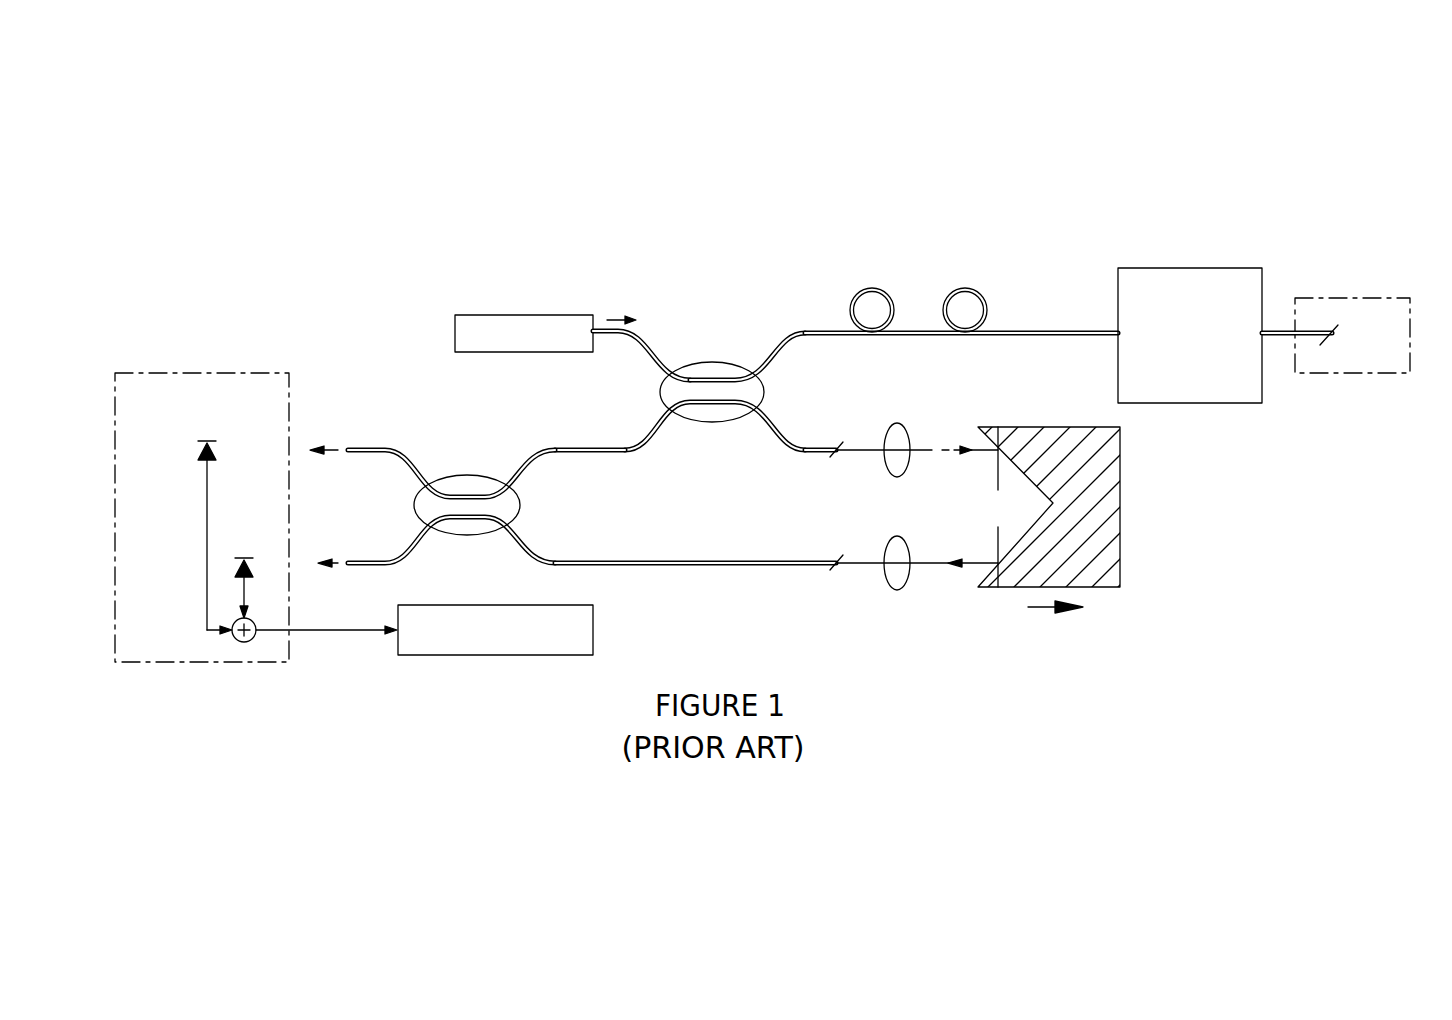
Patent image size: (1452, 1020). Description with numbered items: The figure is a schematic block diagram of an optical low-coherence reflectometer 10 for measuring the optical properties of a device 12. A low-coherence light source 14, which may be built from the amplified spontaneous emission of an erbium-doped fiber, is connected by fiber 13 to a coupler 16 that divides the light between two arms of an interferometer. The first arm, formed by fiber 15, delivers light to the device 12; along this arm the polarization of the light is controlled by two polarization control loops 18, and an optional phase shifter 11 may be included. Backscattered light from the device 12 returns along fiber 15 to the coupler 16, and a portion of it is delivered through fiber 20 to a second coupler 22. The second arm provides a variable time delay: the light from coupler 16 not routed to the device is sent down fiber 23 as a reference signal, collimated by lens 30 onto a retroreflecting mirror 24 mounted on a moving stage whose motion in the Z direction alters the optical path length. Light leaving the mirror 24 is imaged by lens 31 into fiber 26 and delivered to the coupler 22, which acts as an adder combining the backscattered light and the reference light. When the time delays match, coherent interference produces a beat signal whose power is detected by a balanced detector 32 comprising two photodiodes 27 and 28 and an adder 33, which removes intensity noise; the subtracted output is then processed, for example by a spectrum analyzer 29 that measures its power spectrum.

The optical low-coherence reflectometer 10 is at (452, 217).
The phase shifter 11 is at (1207, 391).
The device 12 is at (1387, 355).
The fiber 13 is at (634, 334).
The low-coherence light source 14 is at (460, 323).
The fiber 15 is at (1027, 332).
The coupler 16 is at (707, 372).
The polarization control loops 18 is at (962, 295).
The fiber 20 is at (584, 448).
The second coupler 22 is at (470, 483).
The fiber 23 is at (798, 447).
The retroreflecting mirror 24 is at (1062, 430).
The fiber 26 is at (698, 562).
The photodiode 27 is at (198, 451).
The photodiode 28 is at (242, 562).
The spectrum analyzer 29 is at (593, 651).
The lens 30 is at (897, 432).
The lens 31 is at (893, 590).
The balanced detector 32 is at (280, 402).
The adder 33 is at (250, 641).